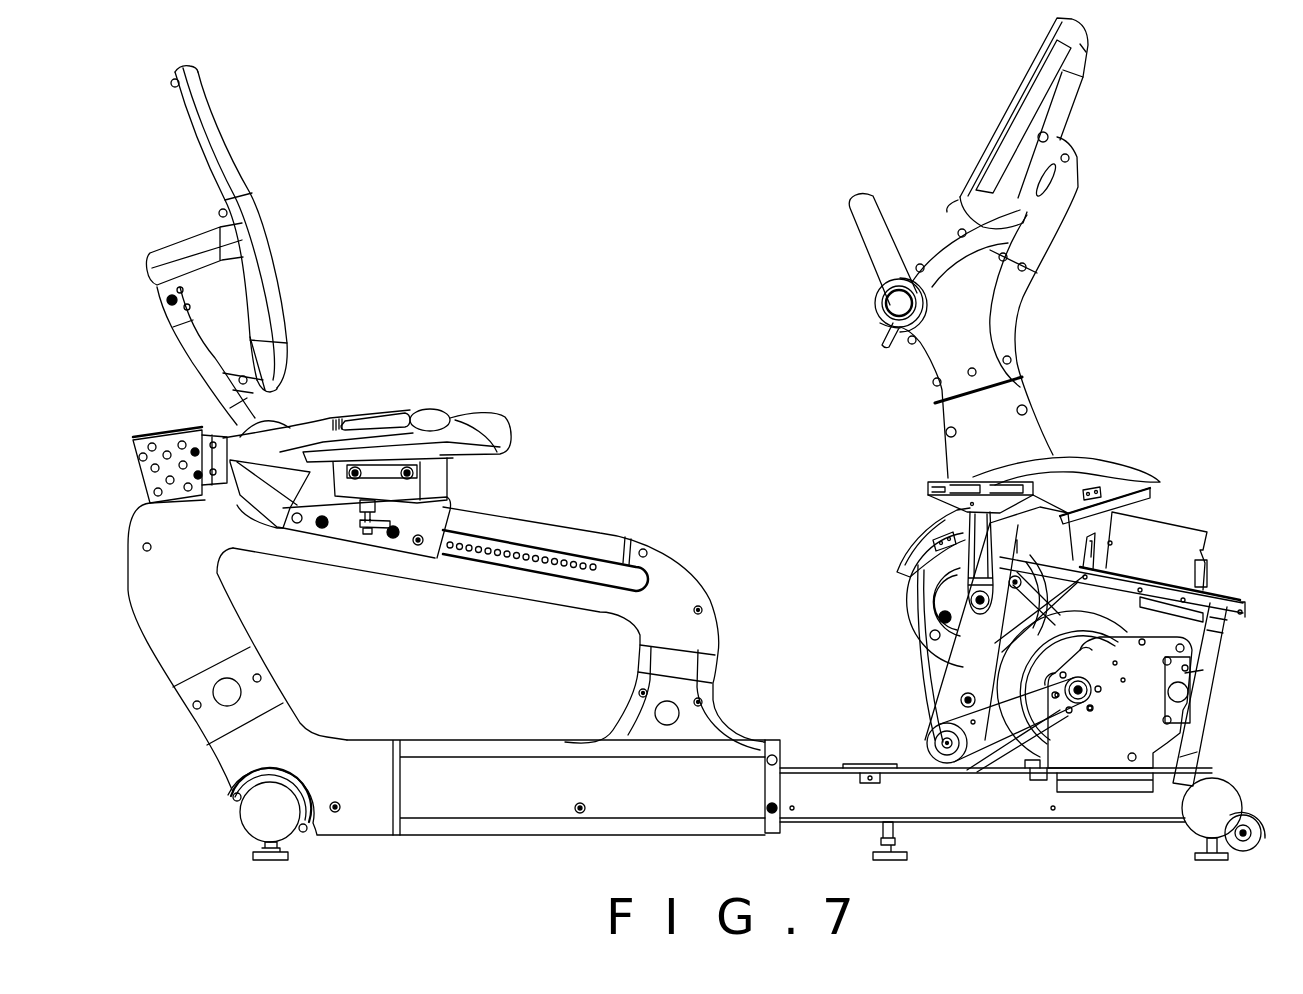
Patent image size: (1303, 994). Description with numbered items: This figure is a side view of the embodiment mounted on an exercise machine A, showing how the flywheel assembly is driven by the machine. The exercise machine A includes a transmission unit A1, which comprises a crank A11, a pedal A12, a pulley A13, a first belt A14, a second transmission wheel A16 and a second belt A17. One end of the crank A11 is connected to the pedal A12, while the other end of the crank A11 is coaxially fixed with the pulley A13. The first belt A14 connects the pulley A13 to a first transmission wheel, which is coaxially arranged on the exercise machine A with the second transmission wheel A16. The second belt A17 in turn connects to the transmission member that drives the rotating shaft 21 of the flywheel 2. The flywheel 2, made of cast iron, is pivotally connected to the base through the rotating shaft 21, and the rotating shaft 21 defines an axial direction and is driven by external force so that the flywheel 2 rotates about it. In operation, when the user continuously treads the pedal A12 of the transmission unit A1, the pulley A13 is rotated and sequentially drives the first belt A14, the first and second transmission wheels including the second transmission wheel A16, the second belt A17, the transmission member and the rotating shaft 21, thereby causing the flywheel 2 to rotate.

The exercise machine A is at (1015, 400).
The transmission unit A1 is at (803, 490).
The crank A11 is at (983, 558).
The pedal A12 is at (928, 484).
The pulley A13 is at (935, 600).
The first belt A14 is at (917, 632).
The second transmission wheel A16 is at (927, 735).
The second belt A17 is at (973, 720).
The flywheel 2 is at (1083, 643).
The rotating shaft 21 is at (1093, 700).